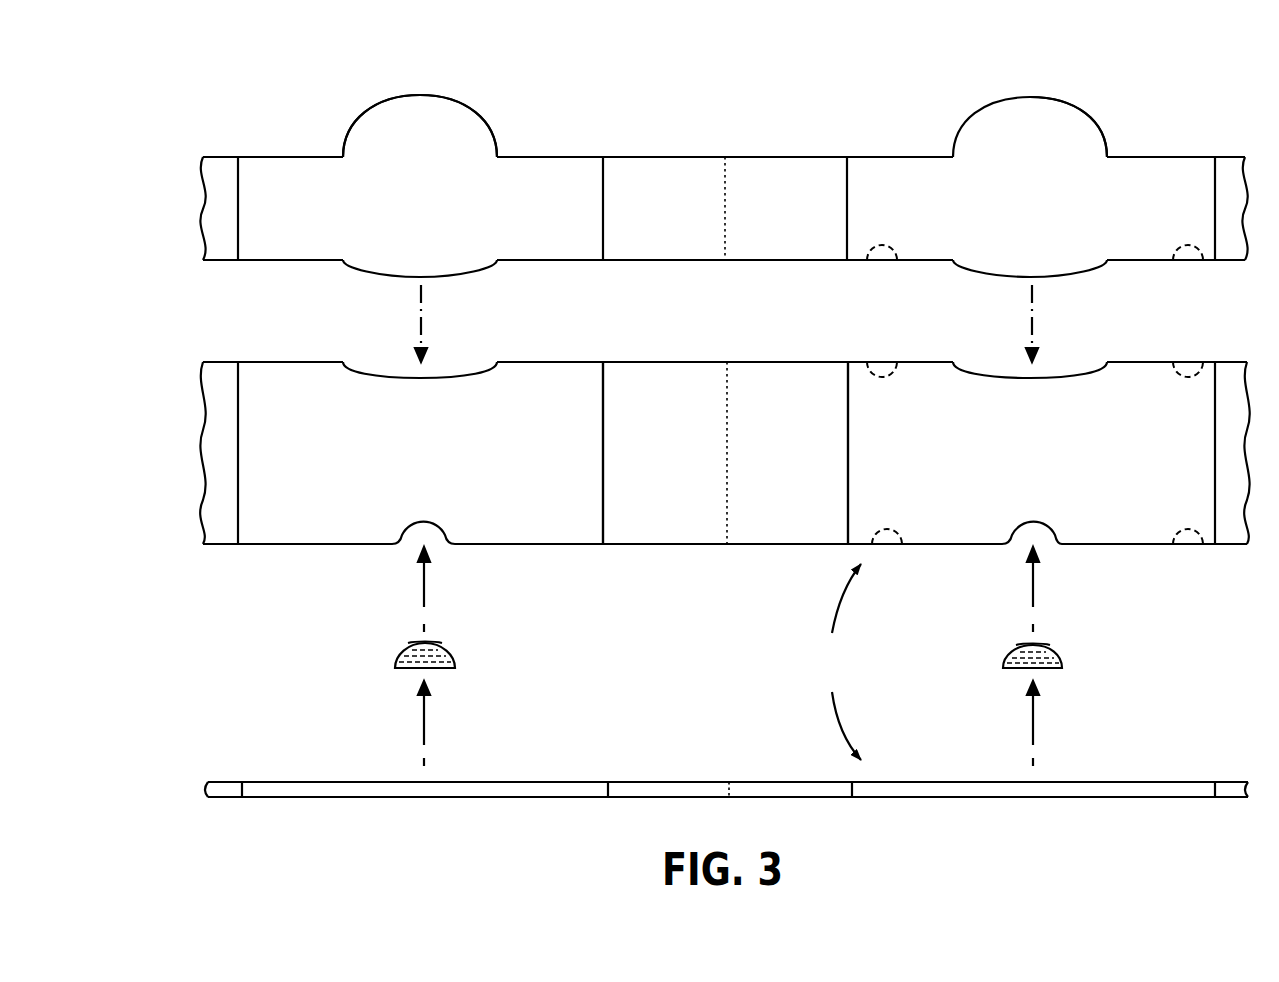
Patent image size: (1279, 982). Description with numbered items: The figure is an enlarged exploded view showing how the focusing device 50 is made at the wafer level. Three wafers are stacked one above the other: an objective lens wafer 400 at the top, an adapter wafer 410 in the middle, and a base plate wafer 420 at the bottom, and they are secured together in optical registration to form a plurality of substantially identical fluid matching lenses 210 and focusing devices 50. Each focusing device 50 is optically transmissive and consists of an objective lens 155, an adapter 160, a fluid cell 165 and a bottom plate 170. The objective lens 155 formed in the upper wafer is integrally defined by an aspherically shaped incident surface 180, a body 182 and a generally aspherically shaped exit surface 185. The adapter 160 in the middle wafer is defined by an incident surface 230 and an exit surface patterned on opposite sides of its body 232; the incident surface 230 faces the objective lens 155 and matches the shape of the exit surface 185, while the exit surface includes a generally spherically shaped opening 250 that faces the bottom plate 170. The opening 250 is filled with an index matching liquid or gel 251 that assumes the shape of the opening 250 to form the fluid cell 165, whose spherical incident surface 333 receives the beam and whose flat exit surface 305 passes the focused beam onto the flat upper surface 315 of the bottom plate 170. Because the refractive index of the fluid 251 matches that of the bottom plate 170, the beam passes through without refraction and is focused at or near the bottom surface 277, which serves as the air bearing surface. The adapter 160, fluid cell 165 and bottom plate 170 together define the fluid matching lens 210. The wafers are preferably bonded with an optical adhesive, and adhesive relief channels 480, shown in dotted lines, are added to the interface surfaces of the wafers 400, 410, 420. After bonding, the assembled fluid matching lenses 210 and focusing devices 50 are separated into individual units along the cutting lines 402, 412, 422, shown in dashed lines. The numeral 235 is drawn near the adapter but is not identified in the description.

The focusing device 50 is at (382, 95).
The objective lens 155 is at (323, 150).
The adapter 160 is at (263, 355).
The fluid cell 165 is at (449, 649).
The bottom plate 170 is at (1129, 777).
The incident surface 180 is at (452, 97).
The body 182 is at (482, 177).
The exit surface 185 is at (467, 277).
The fluid matching lens 210 is at (837, 662).
The incident surface 230 is at (562, 361).
The body 232 is at (945, 530).
The second strip bottom surface 235 is at (565, 547).
The opening 250 is at (272, 528).
The index matching fluid 251 is at (403, 658).
The bottom surface 277 is at (277, 800).
The exit surface 305 is at (447, 668).
The upper surface 315 is at (358, 782).
The incident surface 333 is at (420, 647).
The objective lens wafer 400 is at (661, 151).
The cutting line 402 is at (723, 177).
The adapter wafer 410 is at (743, 328).
The cutting line 412 is at (725, 385).
The base plate wafer 420 is at (746, 777).
The cutting line 422 is at (690, 788).
The adhesive relief channels 480 is at (1178, 372).